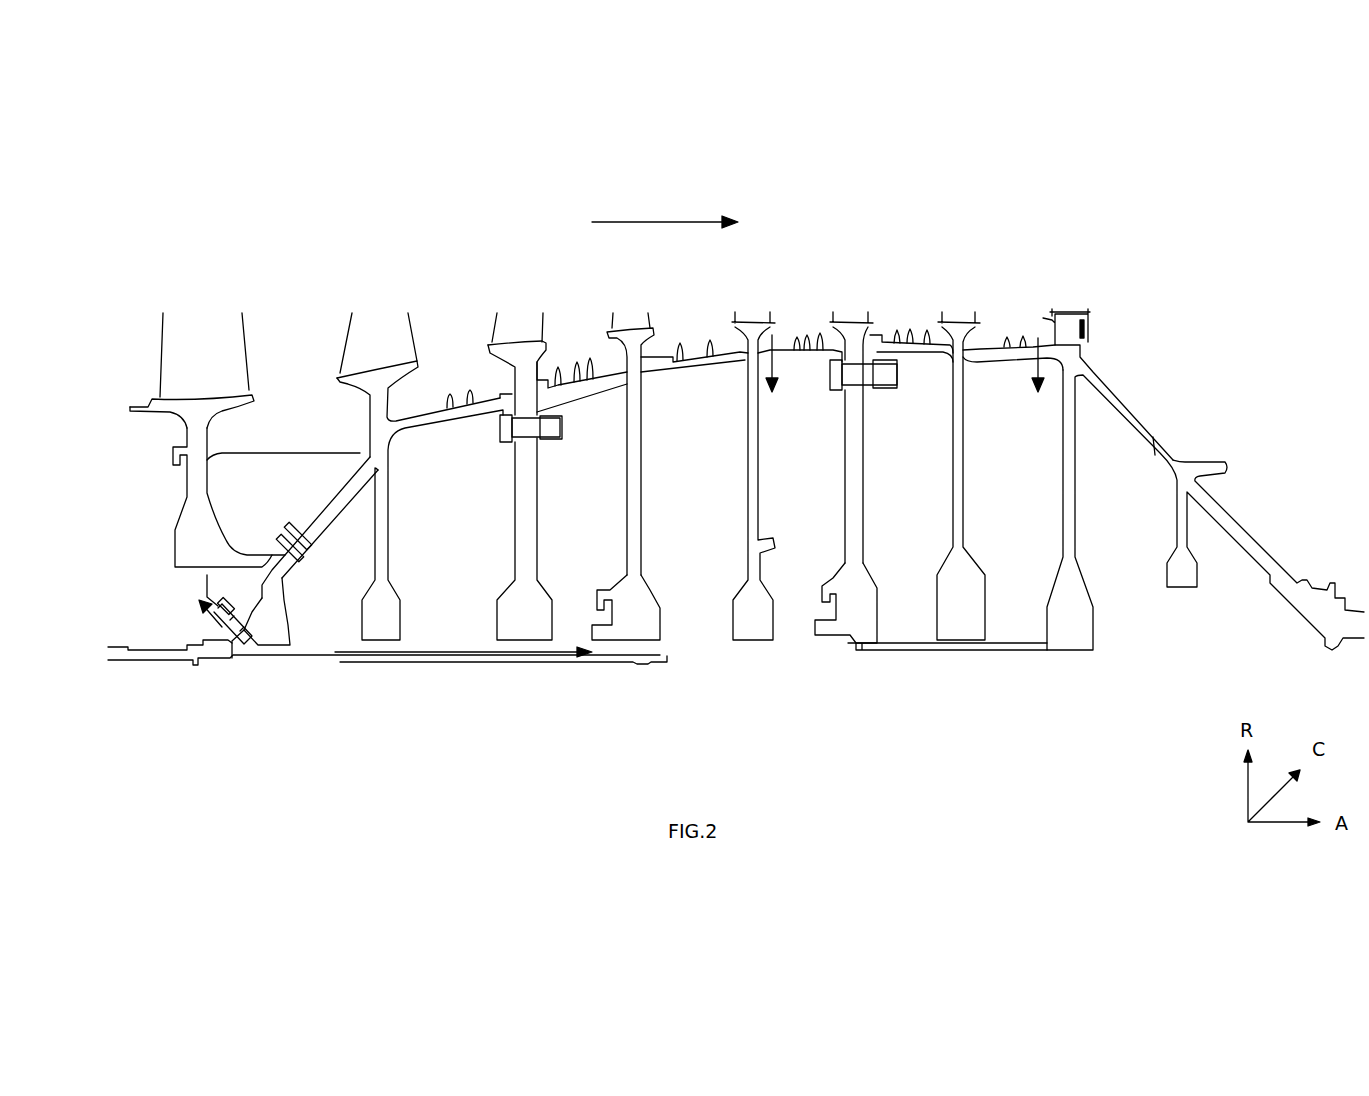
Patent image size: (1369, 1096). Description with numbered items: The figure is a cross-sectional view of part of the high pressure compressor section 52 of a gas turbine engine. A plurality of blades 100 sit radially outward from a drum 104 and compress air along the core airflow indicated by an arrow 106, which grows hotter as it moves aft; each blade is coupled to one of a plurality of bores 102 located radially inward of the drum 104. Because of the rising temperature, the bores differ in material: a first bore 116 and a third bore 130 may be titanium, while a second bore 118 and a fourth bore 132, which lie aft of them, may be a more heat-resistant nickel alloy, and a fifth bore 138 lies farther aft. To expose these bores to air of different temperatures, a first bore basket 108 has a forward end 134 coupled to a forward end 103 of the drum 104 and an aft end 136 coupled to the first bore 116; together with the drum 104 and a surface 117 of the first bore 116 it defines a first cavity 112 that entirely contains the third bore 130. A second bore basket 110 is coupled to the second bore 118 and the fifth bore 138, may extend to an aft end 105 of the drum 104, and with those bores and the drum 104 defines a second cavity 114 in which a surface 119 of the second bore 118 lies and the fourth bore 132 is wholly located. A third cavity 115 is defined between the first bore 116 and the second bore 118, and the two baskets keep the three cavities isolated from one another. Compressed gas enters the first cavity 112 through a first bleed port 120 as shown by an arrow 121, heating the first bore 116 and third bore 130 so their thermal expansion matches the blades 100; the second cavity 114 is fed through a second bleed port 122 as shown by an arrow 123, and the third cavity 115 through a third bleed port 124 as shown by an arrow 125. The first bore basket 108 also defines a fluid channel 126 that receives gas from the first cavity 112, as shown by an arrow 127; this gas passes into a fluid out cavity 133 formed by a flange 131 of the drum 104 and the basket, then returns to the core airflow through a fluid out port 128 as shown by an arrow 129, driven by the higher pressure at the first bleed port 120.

The high pressure compressor section 52 is at (763, 138).
The blades 100 is at (385, 330).
The bores 102 is at (397, 588).
The forward end of the drum 103 is at (320, 503).
The drum 104 is at (358, 457).
The aft end of the drum 105 is at (1247, 533).
The arrow 106 is at (648, 222).
The first bore basket 108 is at (380, 663).
The second bore basket 110 is at (952, 652).
The first cavity 112 is at (438, 623).
The second cavity 114 is at (1008, 578).
The third cavity 115 is at (700, 563).
The first bore 116 is at (660, 608).
The surface of the first bore 117 is at (623, 553).
The second bore 118 is at (837, 620).
The surface of the second bore 119 is at (864, 500).
The first bleed port 120 is at (287, 537).
The arrow 121 is at (297, 540).
The second bleed port 122 is at (1040, 345).
The arrow 123 is at (1037, 358).
The third bleed port 124 is at (772, 345).
The arrow 125 is at (775, 370).
The fluid channel 126 is at (295, 658).
The arrow 127 is at (525, 652).
The fluid out port 128 is at (212, 627).
The arrow 129 is at (226, 611).
The third bore 130 is at (512, 578).
The flange 131 is at (272, 636).
The fourth bore 132 is at (967, 526).
The fluid out cavity 133 is at (257, 647).
The forward end of the first bore basket 134 is at (193, 666).
The aft end of the first bore basket 136 is at (671, 664).
The fifth bore 138 is at (1094, 640).